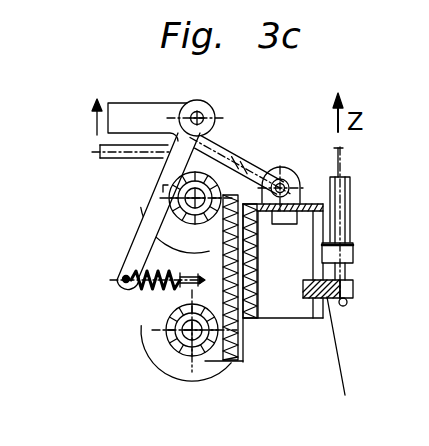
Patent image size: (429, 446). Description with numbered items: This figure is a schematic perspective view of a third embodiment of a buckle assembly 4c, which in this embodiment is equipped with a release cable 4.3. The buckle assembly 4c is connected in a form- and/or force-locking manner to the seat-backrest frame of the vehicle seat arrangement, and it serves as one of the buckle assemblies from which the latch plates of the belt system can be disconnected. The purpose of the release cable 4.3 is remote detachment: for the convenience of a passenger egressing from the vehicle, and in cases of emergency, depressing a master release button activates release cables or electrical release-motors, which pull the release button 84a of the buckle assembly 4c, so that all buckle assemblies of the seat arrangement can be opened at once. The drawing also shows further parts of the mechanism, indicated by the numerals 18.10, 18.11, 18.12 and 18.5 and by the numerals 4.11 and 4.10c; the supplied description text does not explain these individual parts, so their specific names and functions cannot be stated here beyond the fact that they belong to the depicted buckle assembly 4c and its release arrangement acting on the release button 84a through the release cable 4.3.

The lever arm 18.10 is at (145, 118).
The pivot 18.11 is at (203, 113).
The link 18.12 is at (226, 203).
The spring 18.5 is at (137, 235).
The release cable 4.3 is at (333, 160).
The buckle assembly 4c is at (285, 264).
The stop 4.11 is at (276, 222).
The housing 4.10c is at (246, 351).
The release button 84a is at (345, 397).